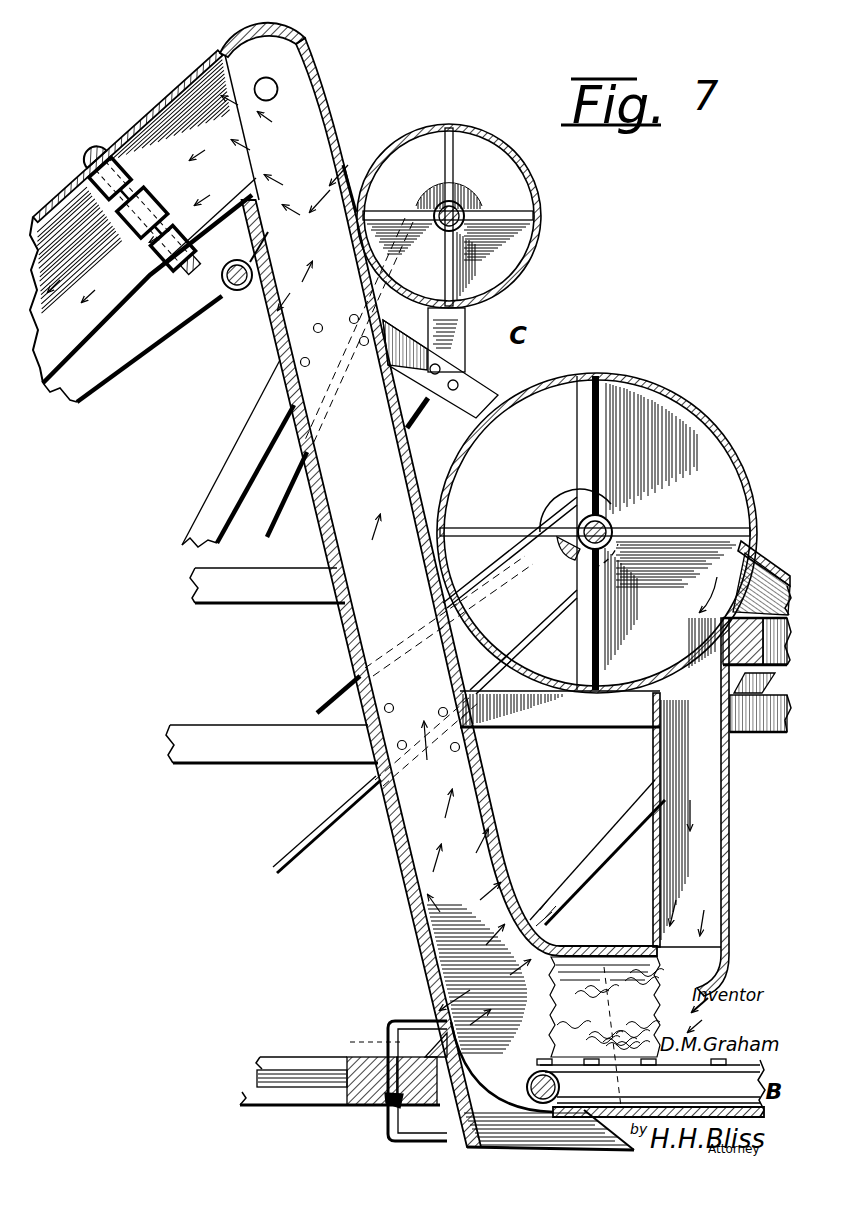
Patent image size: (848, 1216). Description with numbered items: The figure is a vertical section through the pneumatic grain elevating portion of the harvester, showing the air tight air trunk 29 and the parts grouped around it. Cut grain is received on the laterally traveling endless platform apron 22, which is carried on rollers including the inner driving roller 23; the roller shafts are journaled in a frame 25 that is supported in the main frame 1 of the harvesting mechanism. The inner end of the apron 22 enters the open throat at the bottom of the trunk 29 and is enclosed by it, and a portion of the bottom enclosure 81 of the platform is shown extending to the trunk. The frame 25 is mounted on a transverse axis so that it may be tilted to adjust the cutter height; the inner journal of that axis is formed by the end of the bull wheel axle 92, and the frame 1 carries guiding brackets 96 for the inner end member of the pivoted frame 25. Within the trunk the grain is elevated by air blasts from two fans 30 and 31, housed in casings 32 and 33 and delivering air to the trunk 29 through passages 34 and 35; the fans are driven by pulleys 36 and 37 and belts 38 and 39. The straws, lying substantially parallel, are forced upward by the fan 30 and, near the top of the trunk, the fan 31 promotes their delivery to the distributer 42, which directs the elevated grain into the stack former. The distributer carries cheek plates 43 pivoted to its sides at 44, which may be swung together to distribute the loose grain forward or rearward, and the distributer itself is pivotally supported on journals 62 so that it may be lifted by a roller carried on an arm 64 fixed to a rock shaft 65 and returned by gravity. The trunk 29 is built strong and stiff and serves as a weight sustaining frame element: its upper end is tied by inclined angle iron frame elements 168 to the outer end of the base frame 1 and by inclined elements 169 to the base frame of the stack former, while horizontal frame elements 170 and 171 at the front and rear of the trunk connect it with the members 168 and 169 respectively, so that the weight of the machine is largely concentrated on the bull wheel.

The frame 1 is at (362, 1057).
The endless platform apron 22 is at (648, 1081).
The inner roller 23 is at (558, 1089).
The frame 25 is at (390, 1099).
The air trunk 29 is at (492, 586).
The fan 30 is at (479, 529).
The fan 31 is at (444, 154).
The casing 32 is at (591, 373).
The casing 33 is at (507, 147).
The passage 34 is at (705, 839).
The passage 35 is at (352, 186).
The pulley 36 is at (560, 561).
The pulley 37 is at (478, 198).
The belt 38 is at (343, 692).
The belt 39 is at (283, 518).
The distributer 42 is at (161, 104).
The cheek plates 43 is at (143, 276).
The pivot 44 is at (91, 148).
The journals 62 is at (268, 84).
The arm 64 is at (137, 353).
The rock shaft 65 is at (237, 292).
The bottom enclosure 81 is at (749, 1099).
The bull wheel axle 92 is at (297, 1073).
The guiding brackets 96 is at (410, 1024).
The inclined angle iron frame elements 168 is at (463, 393).
The inclined angle iron frame elements 169 is at (215, 487).
The horizontal frame element 170 is at (576, 717).
The horizontal frame element 171 is at (237, 750).